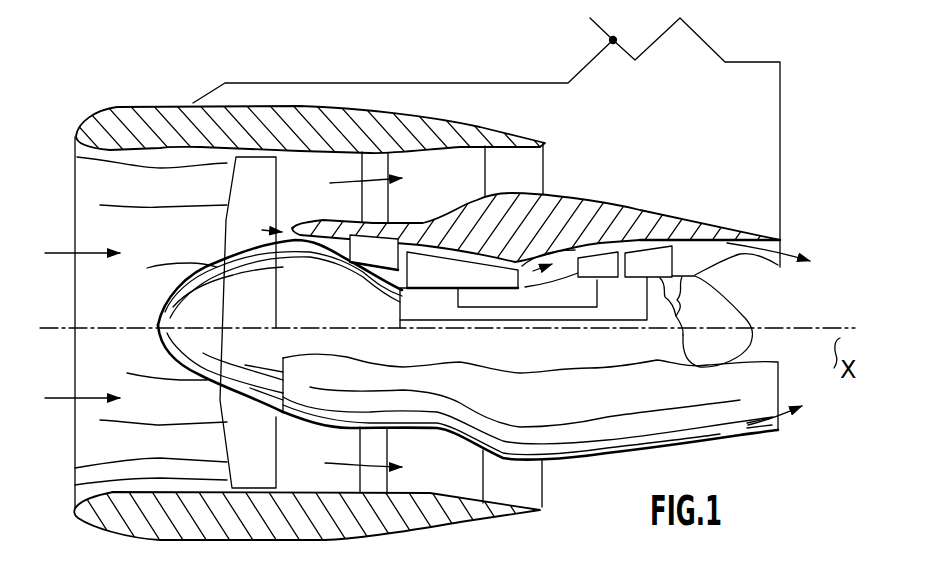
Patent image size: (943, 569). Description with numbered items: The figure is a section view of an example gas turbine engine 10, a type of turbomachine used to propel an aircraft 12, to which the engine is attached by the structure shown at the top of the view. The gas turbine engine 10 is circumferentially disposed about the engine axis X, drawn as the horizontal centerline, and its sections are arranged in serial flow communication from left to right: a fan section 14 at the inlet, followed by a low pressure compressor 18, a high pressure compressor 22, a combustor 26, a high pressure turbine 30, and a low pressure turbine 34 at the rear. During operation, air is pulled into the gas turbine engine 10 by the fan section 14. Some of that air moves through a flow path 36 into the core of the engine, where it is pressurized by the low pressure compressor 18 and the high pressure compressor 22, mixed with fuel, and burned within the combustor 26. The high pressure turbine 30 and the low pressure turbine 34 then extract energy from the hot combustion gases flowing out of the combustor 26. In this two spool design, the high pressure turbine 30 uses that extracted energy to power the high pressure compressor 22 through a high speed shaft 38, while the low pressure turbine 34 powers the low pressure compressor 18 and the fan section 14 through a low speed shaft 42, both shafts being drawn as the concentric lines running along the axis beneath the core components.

The gas turbine engine 10 is at (128, 107).
The aircraft 12 is at (768, 131).
The fan section 14 is at (220, 393).
The low pressure compressor 18 is at (378, 252).
The high pressure compressor 22 is at (456, 273).
The combustor 26 is at (560, 282).
The high pressure turbine 30 is at (607, 277).
The low pressure turbine 34 is at (688, 308).
The flow path 36 is at (262, 230).
The high speed shaft 38 is at (522, 308).
The low speed shaft 42 is at (453, 320).